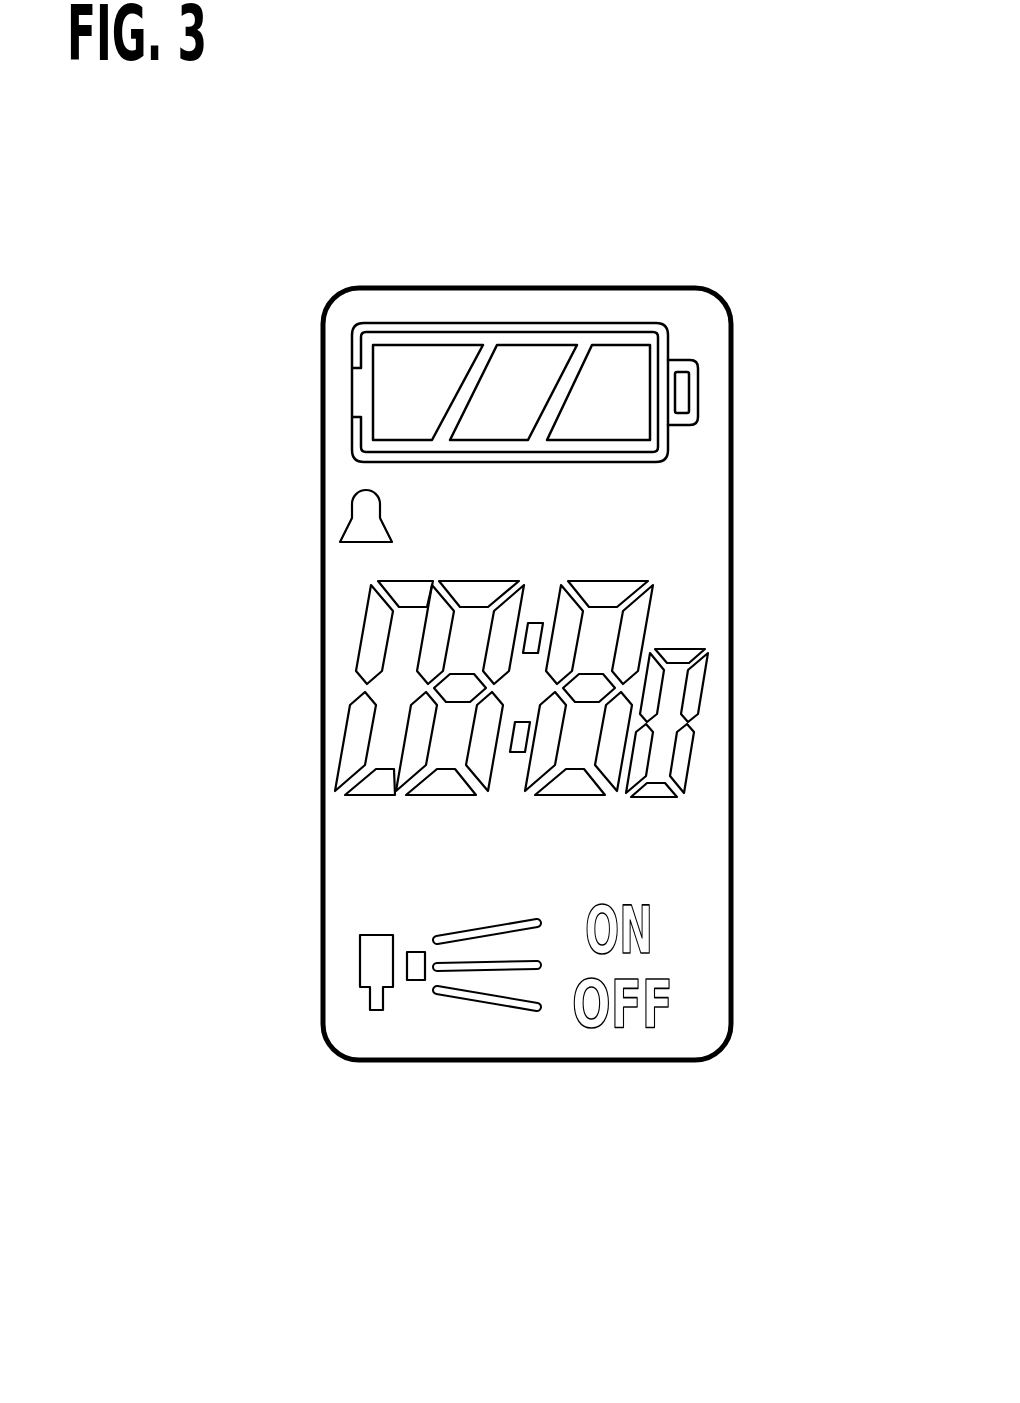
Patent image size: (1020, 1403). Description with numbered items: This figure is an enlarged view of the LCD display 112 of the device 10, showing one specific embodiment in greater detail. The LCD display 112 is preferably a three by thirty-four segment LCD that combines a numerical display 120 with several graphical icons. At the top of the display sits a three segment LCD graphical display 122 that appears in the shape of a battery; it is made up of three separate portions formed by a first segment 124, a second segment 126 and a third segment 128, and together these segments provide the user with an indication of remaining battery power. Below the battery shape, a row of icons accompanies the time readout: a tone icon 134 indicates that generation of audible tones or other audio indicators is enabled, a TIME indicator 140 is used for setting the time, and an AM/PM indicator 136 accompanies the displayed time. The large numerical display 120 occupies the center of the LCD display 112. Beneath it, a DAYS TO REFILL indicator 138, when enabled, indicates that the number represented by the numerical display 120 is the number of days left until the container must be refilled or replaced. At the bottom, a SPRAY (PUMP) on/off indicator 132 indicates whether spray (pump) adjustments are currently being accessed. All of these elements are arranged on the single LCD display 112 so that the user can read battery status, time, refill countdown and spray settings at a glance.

The dispensing device 10 is at (543, 1227).
The LCD display 112 is at (333, 1194).
The numerical display 120 is at (338, 666).
The three segment LCD graphical display 122 is at (410, 333).
The first segment 124 is at (453, 355).
The second segment 126 is at (547, 360).
The third segment 128 is at (622, 368).
The SPRAY (PUMP) on/off indicator 132 is at (373, 962).
The tone icon 134 is at (355, 517).
The AM/PM indicator 136 is at (710, 526).
The DAYS TO REFILL indicator 138 is at (350, 853).
The TIME indicator 140 is at (392, 485).